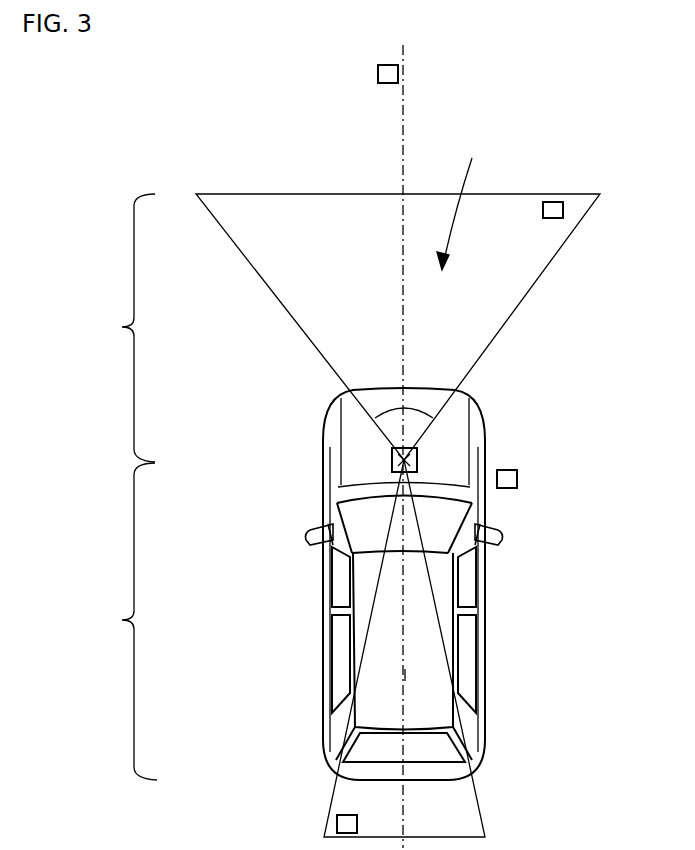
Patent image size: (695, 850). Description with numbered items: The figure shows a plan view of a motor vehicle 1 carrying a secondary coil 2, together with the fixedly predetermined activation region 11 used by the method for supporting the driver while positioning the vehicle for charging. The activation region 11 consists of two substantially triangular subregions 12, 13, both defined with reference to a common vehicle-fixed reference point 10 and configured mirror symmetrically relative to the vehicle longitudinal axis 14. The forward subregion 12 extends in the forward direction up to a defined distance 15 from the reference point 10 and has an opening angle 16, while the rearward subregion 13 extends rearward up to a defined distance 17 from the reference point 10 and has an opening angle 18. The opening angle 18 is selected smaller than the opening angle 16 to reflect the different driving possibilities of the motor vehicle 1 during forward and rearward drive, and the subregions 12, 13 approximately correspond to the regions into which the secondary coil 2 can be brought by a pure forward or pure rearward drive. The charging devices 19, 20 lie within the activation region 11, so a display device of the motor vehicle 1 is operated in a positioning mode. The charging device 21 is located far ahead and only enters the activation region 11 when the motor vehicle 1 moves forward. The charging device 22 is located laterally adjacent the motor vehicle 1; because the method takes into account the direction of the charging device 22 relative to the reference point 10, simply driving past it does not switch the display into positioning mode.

The motor vehicle 1 is at (512, 589).
The secondary coil 2 is at (415, 455).
The vehicle-fixed reference point 10 is at (417, 458).
The activation region 11 is at (461, 200).
The subregion 12 is at (513, 315).
The subregion 13 is at (482, 807).
The vehicle longitudinal axis 14 is at (407, 675).
The defined distance 15 is at (125, 328).
The opening angle 16 is at (397, 426).
The defined distance 17 is at (126, 621).
The opening angle 18 is at (400, 505).
The charging device 19 is at (553, 200).
The charging device 20 is at (335, 822).
The charging device 21 is at (376, 73).
The charging device 22 is at (518, 478).